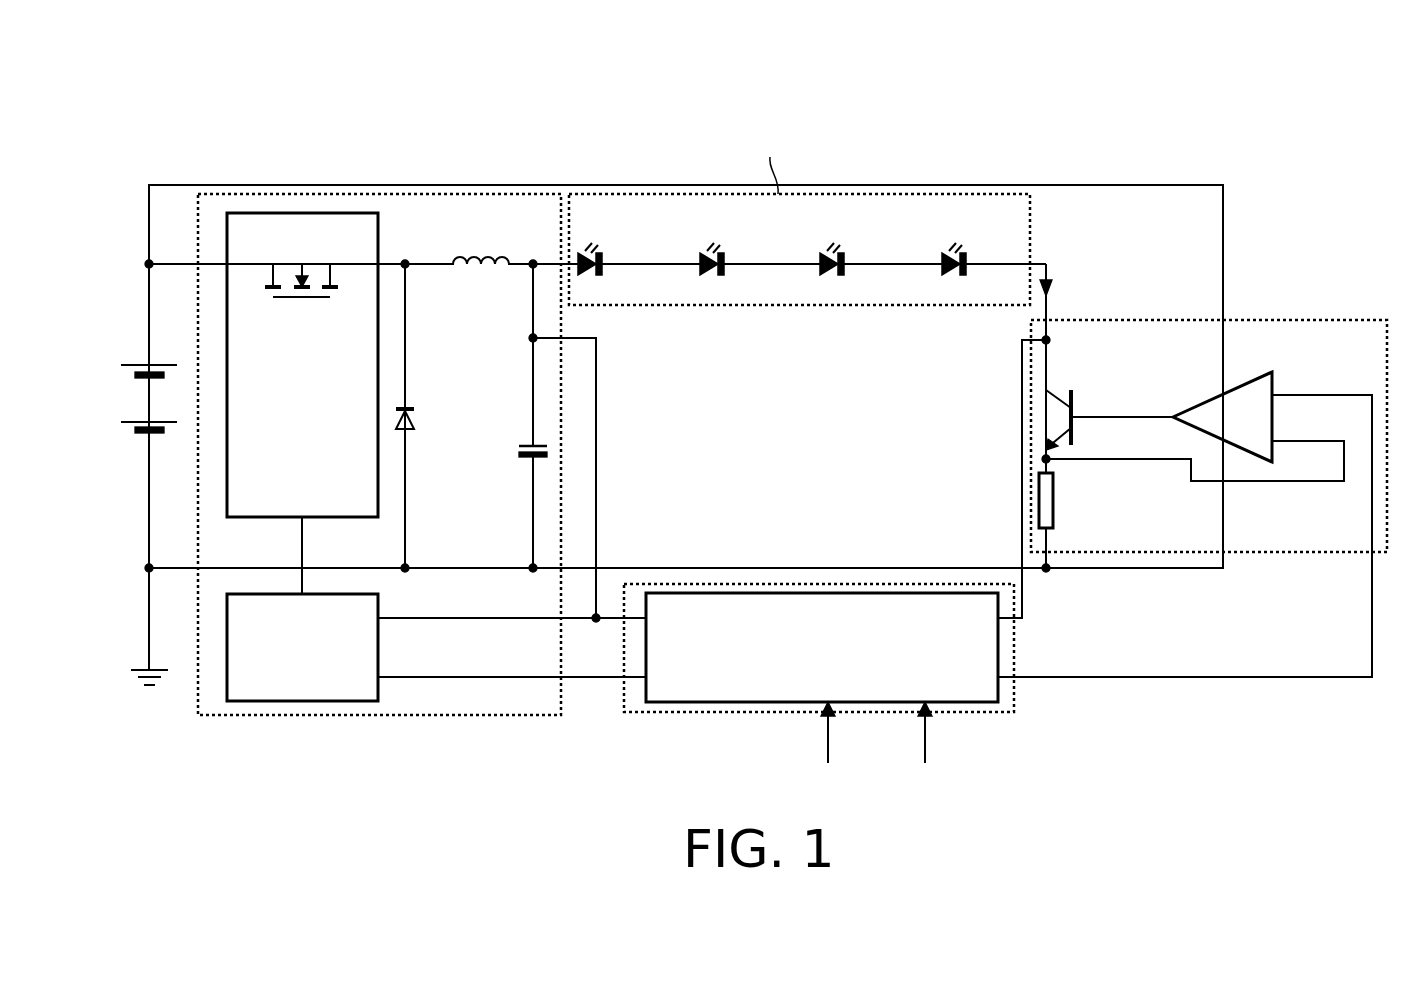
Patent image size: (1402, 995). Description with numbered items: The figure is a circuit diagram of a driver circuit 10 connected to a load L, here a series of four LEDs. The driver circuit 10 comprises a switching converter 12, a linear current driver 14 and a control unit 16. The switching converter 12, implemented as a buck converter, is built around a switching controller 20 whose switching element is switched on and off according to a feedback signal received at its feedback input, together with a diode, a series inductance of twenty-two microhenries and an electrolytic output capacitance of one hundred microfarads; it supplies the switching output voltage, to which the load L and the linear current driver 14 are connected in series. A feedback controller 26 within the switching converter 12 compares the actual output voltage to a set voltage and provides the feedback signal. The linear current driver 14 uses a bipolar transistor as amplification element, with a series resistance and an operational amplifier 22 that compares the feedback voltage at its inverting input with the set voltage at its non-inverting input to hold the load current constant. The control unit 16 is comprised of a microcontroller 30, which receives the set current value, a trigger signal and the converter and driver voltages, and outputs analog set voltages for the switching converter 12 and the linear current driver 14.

The driver circuit 10 is at (1230, 124).
The switching converter 12 is at (403, 194).
The linear current driver 14 is at (1312, 320).
The control unit 16 is at (732, 712).
The switching controller 20 is at (302, 297).
The operational amplifier 22 is at (1247, 462).
The feedback controller 26 is at (302, 647).
The microcontroller 30 is at (822, 647).